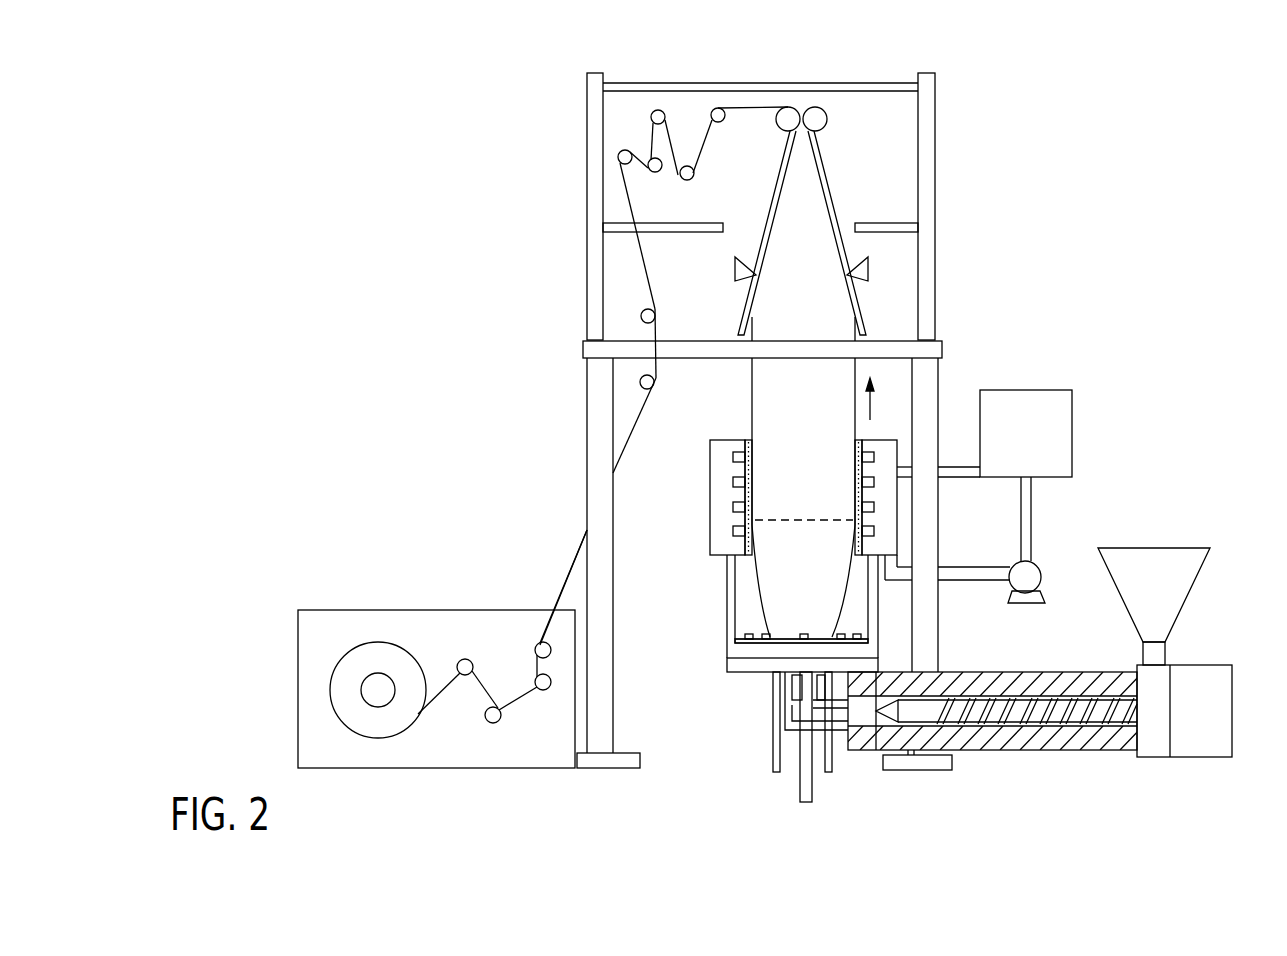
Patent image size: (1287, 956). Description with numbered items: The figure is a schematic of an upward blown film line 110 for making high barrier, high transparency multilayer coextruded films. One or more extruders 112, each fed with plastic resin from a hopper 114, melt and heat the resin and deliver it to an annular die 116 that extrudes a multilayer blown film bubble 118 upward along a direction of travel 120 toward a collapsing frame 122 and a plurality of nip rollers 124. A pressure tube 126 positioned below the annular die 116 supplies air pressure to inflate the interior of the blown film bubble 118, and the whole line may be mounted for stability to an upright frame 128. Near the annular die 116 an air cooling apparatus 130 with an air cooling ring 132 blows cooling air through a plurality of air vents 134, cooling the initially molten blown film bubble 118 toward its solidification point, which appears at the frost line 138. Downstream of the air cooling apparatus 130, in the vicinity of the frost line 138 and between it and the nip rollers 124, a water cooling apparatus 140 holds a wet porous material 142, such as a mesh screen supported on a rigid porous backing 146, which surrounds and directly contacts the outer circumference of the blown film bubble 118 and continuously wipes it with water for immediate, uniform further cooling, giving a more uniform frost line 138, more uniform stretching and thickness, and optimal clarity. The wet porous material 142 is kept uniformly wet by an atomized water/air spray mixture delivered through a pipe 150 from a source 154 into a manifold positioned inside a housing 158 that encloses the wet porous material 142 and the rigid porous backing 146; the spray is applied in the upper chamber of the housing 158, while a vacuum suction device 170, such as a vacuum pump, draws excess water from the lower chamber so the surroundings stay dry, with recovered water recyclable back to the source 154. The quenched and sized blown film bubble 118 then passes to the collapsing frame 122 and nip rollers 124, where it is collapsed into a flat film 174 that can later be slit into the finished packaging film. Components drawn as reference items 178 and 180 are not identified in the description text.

The blown film line 110 is at (585, 787).
The extruder 112 is at (1040, 751).
The hopper 114 is at (1158, 548).
The annular die 116 is at (767, 650).
The blown film bubble 118 is at (752, 422).
The direction of travel 120 is at (868, 408).
The collapsing frame 122 is at (829, 193).
The nip rollers 124 is at (819, 120).
The pressure tube 126 is at (800, 783).
The upright frame 128 is at (937, 322).
The air cooling apparatus 130 is at (857, 647).
The air cooling ring 132 is at (801, 641).
The air vents 134 is at (857, 640).
The frost line 138 is at (797, 523).
The water cooling apparatus 140 is at (710, 495).
The wet porous material 142 is at (856, 479).
The rigid porous backing 146 is at (735, 462).
The pipe 150 is at (962, 466).
The source 154 is at (1073, 436).
The housing 158 is at (897, 510).
The vacuum suction device 170 is at (1045, 565).
The flat film 174 is at (752, 108).
The roller 178 is at (652, 111).
The spool 180 is at (375, 690).